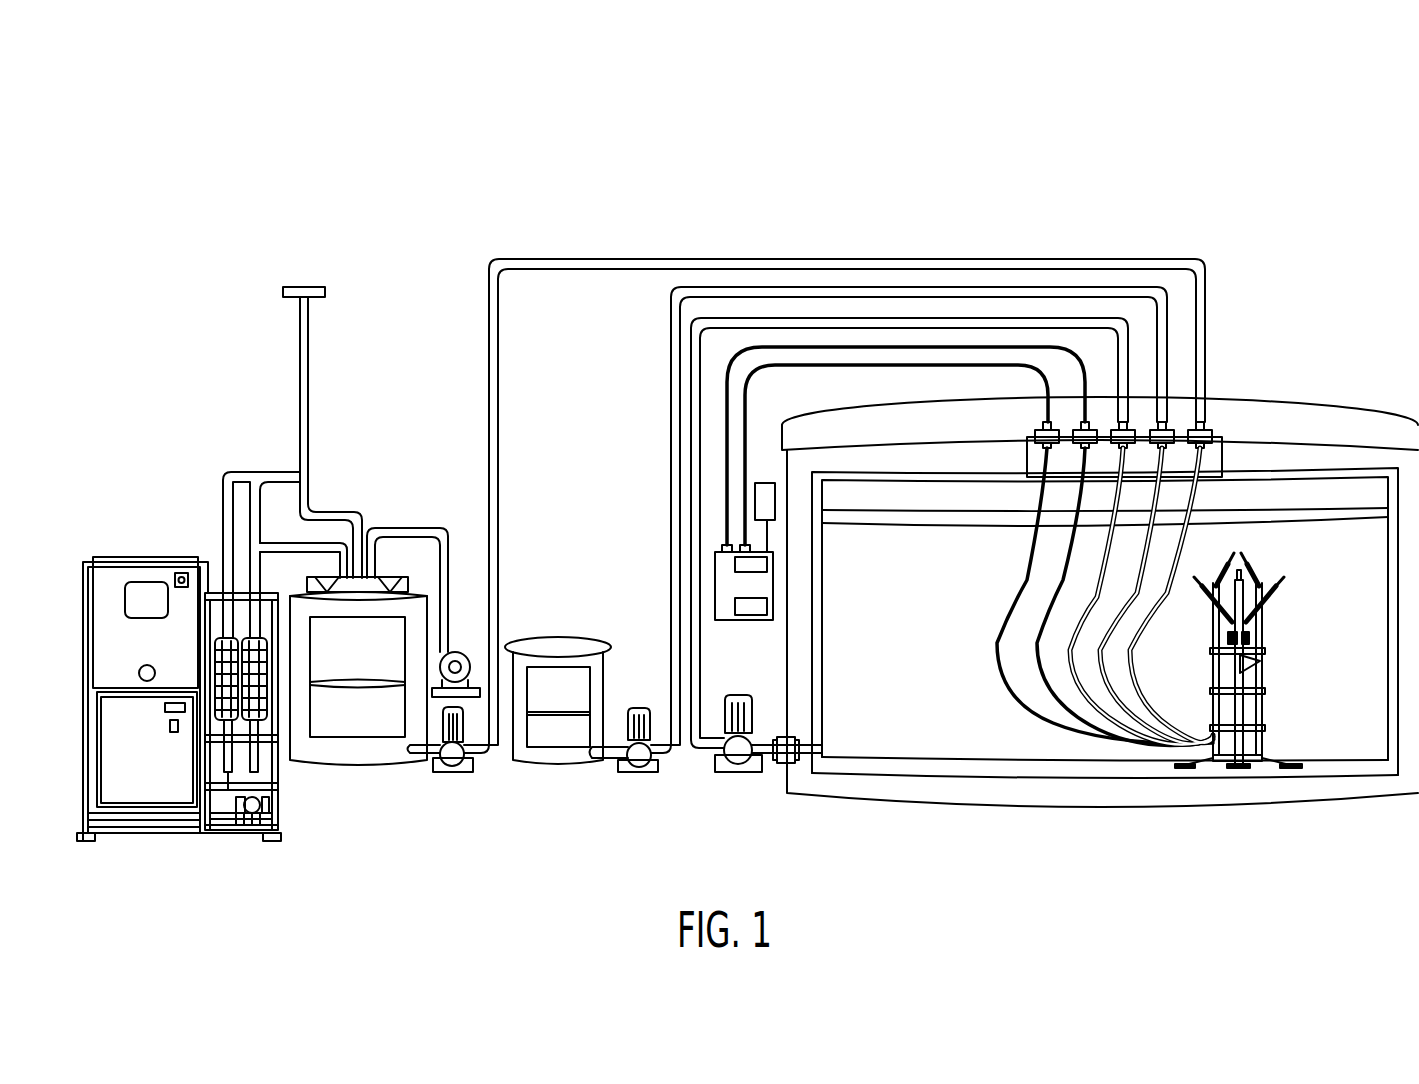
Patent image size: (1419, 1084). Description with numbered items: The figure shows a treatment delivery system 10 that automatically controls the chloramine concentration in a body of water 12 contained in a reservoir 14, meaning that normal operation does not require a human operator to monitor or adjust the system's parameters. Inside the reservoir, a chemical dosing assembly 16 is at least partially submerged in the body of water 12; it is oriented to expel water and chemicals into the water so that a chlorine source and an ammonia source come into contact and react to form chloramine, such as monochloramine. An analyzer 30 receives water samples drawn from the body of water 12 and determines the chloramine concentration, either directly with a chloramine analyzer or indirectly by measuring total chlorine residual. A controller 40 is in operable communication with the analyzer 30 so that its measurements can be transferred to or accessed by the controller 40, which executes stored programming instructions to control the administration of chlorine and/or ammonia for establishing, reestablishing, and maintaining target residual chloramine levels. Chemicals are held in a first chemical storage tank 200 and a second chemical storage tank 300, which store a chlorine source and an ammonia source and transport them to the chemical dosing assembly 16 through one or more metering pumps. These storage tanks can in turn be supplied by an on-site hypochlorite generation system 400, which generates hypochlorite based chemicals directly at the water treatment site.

The treatment delivery system 10 is at (1200, 153).
The body of water 12 is at (875, 697).
The reservoir 14 is at (1293, 403).
The chemical dosing assembly 16 is at (1213, 735).
The analyzer 30 is at (742, 620).
The controller 40 is at (767, 483).
The first chemical storage tank 200 is at (353, 767).
The second chemical storage tank 300 is at (557, 767).
The on-site hypochlorite generation system 400 is at (118, 572).